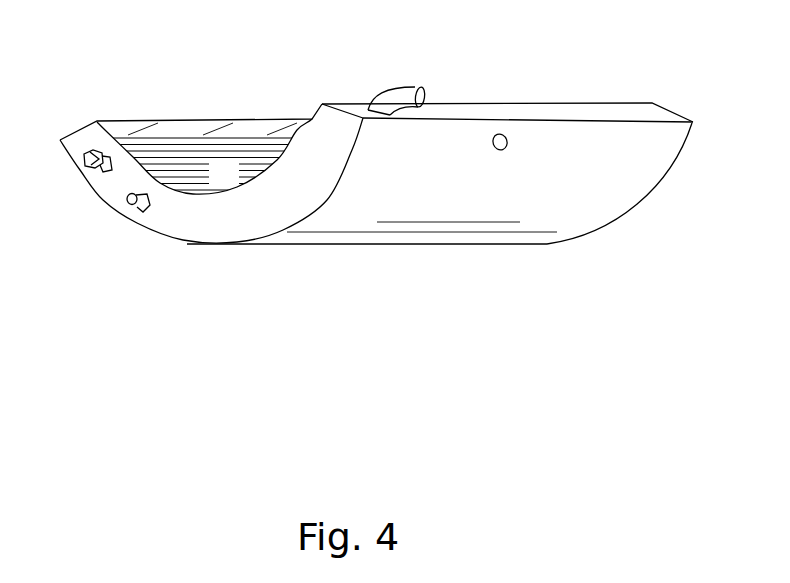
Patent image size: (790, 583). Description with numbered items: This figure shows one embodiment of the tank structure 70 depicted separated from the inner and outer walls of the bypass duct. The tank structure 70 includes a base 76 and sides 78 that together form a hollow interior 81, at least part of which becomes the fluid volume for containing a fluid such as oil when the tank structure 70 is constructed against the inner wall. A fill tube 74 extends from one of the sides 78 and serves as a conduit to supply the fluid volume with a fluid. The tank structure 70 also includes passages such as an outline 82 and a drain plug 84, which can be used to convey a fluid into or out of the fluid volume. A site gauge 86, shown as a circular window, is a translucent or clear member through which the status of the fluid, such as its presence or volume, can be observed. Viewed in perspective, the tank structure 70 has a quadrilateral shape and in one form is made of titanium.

The tank structure 70 is at (670, 165).
The fill tube 74 is at (389, 80).
The base 76 is at (592, 213).
The sides 78 is at (163, 120).
The hollow interior 81 is at (235, 179).
The outline 82 is at (131, 205).
The drain plug 84 is at (83, 162).
The site gauge 86 is at (507, 143).